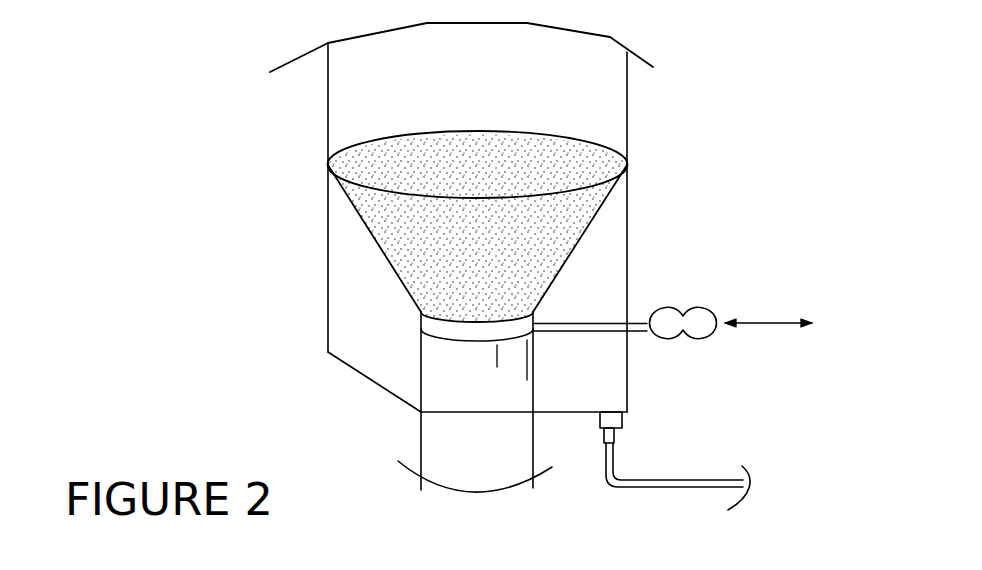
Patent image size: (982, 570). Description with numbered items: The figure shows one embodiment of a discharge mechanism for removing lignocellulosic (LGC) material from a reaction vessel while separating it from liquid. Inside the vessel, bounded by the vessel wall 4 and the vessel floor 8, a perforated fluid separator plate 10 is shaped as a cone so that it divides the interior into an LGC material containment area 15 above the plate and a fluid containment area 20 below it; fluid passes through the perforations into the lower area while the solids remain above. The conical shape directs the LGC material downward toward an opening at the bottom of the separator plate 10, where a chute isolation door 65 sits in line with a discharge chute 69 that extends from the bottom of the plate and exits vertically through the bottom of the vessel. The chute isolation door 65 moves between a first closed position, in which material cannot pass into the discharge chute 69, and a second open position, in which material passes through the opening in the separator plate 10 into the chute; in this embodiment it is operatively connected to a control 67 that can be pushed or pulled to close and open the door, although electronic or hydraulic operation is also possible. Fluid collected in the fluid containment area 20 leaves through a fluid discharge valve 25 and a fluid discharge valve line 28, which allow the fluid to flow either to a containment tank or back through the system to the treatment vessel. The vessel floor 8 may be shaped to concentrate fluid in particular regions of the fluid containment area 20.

The vessel wall 4 is at (628, 112).
The vessel floor 8 is at (400, 405).
The perforated fluid separator plate 10 is at (602, 213).
The LGC material containment area 15 is at (492, 96).
The fluid containment area 20 is at (350, 327).
The fluid discharge valve 25 is at (620, 433).
The fluid discharge valve line 28 is at (723, 478).
The chute isolation door 65 is at (502, 330).
The control 67 is at (708, 303).
The discharge chute 69 is at (505, 453).